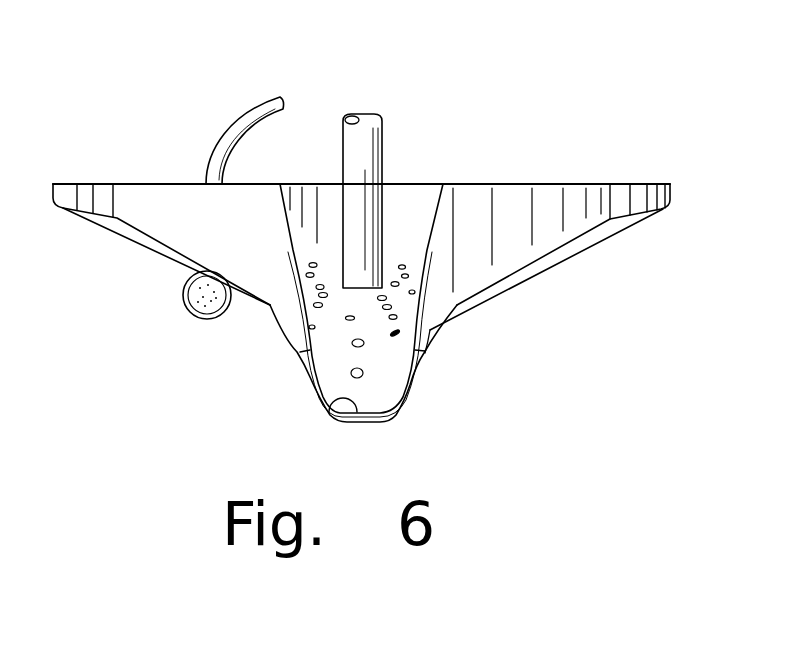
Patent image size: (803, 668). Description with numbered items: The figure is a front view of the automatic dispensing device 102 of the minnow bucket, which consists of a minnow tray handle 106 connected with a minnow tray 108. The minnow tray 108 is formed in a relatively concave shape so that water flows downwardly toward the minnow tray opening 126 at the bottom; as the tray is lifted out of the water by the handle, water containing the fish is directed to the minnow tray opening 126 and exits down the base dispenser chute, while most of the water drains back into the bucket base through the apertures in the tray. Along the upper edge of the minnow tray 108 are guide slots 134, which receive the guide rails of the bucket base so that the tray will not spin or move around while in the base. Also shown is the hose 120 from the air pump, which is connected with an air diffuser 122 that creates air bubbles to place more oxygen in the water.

The automatic dispensing device 102 is at (492, 98).
The minnow tray handle 106 is at (374, 127).
The minnow tray 108 is at (508, 185).
The hose 120 is at (247, 112).
The air diffuser 122 is at (182, 298).
The minnow tray opening 126 is at (328, 412).
The guide slot 134 is at (102, 188).